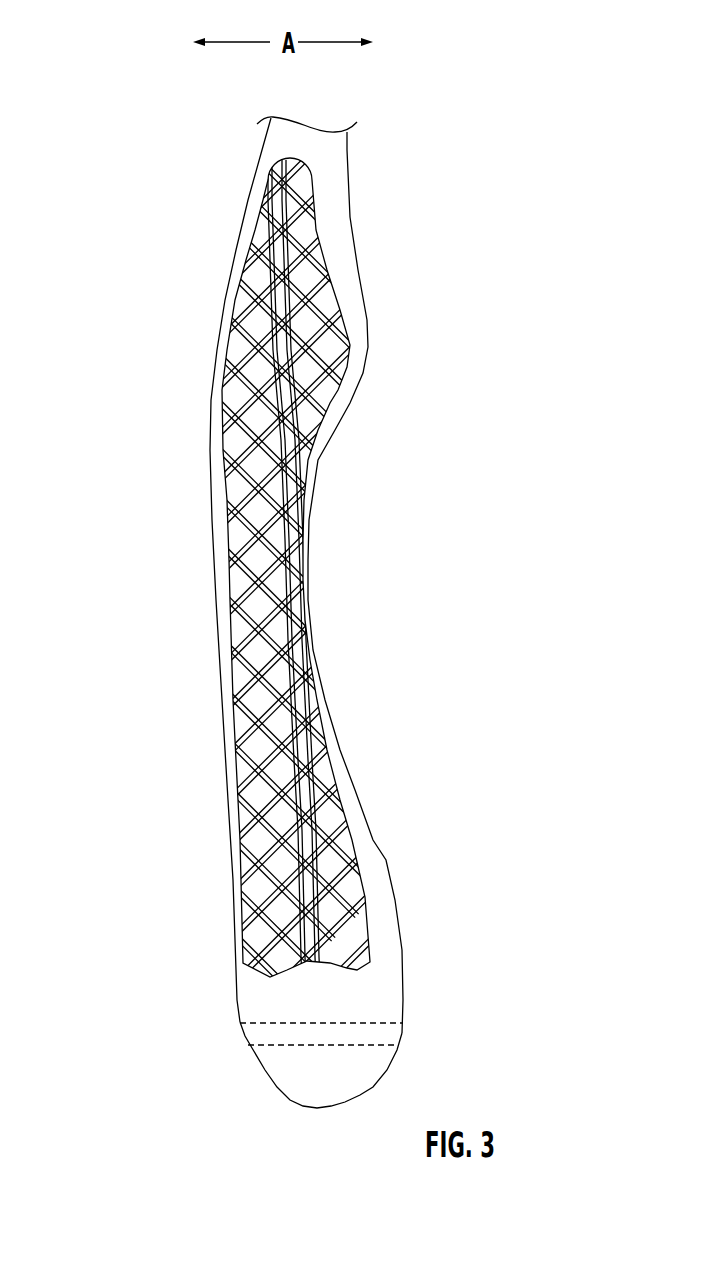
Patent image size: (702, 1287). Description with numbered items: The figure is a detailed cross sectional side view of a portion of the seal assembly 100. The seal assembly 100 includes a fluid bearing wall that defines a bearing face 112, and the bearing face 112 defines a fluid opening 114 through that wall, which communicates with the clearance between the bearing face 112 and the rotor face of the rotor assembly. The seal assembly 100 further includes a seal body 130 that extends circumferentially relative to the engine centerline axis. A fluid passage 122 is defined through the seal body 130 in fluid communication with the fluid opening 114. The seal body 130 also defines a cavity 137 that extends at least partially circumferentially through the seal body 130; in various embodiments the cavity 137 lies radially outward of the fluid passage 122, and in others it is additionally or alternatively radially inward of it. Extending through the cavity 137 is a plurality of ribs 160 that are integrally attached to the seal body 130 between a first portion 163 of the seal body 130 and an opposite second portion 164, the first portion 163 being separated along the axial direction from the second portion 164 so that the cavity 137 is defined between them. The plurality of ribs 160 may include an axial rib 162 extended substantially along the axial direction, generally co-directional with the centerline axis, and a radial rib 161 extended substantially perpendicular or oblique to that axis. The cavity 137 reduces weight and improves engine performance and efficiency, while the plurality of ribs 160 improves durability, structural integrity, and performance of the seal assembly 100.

The seal assembly 100 is at (419, 86).
The bearing face 112 is at (403, 987).
The fluid opening 114 is at (407, 1030).
The fluid passage 122 is at (282, 1032).
The seal body 130 is at (352, 305).
The cavity 137 is at (305, 449).
The plurality of ribs 160 is at (275, 700).
The radial rib 161 is at (290, 783).
The axial rib 162 is at (226, 466).
The first portion 163 is at (240, 623).
The second portion 164 is at (318, 638).